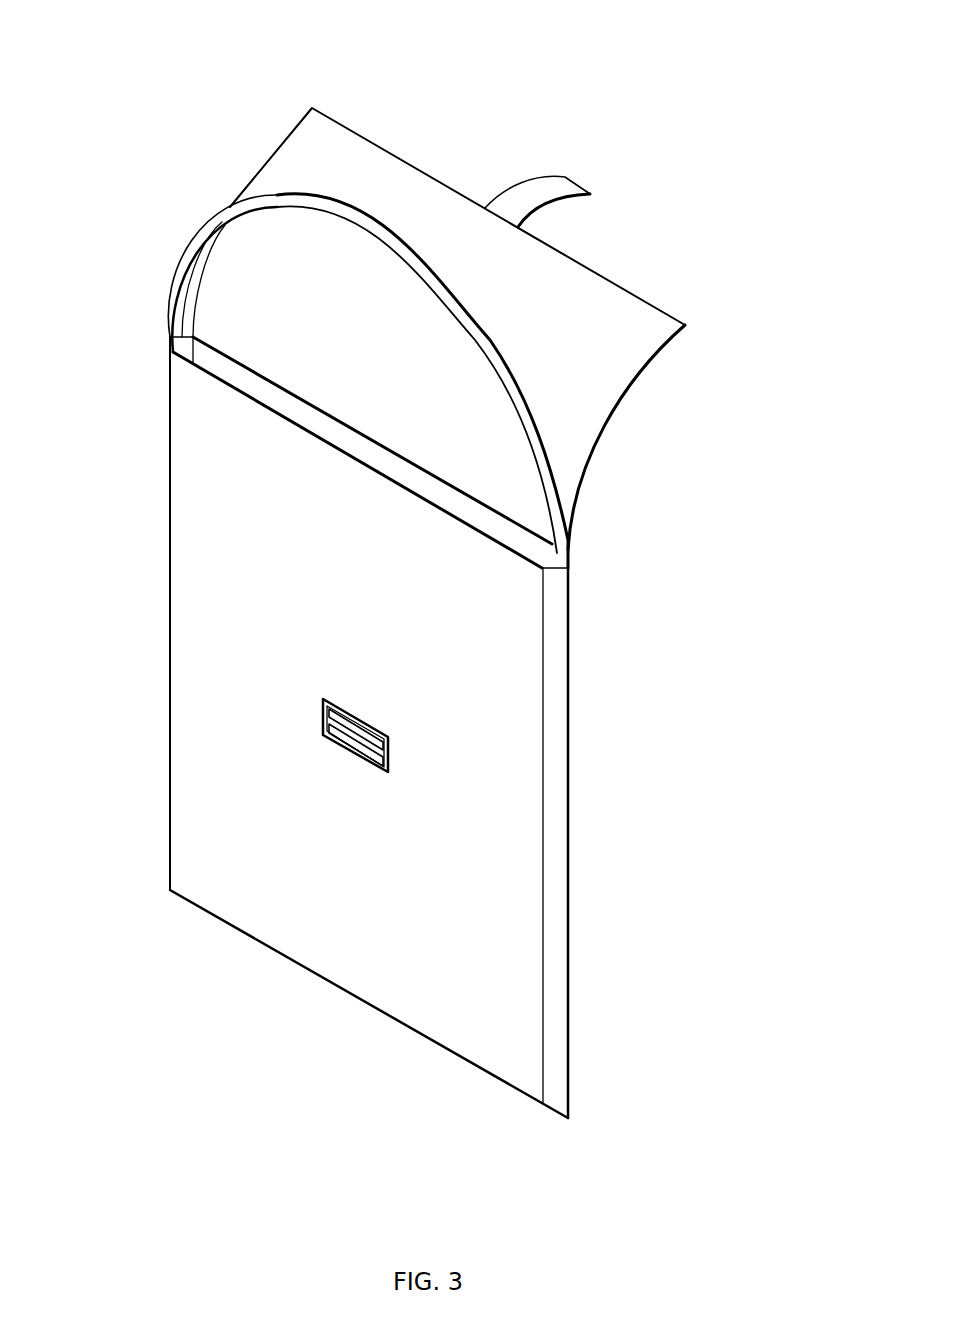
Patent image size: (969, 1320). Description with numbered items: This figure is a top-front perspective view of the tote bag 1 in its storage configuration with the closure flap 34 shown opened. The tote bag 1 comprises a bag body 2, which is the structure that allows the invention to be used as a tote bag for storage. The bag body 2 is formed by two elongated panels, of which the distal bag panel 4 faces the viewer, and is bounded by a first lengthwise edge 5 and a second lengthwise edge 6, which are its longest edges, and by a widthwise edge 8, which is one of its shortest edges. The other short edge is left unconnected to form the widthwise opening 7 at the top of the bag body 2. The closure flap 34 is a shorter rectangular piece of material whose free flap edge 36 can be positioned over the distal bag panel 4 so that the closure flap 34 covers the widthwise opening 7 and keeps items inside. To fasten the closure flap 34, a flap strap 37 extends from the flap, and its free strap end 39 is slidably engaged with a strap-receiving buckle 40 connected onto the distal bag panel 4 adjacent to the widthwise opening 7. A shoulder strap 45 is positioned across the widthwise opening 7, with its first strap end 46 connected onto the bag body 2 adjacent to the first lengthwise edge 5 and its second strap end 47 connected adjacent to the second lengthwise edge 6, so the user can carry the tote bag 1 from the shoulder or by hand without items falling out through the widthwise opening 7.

The tote bag 1 is at (562, 50).
The bag body 2 is at (668, 1000).
The distal bag panel 4 is at (178, 708).
The first lengthwise edge 5 is at (170, 607).
The second lengthwise edge 6 is at (568, 893).
The widthwise opening 7 is at (335, 432).
The widthwise edge 8 is at (347, 992).
The closure flap 34 is at (278, 158).
The free flap edge 36 is at (633, 290).
The flap strap 37 is at (522, 197).
The free strap end 39 is at (578, 194).
The strap-receiving buckle 40 is at (388, 771).
The shoulder strap 45 is at (503, 348).
The first strap end 46 is at (169, 338).
The second strap end 47 is at (571, 567).